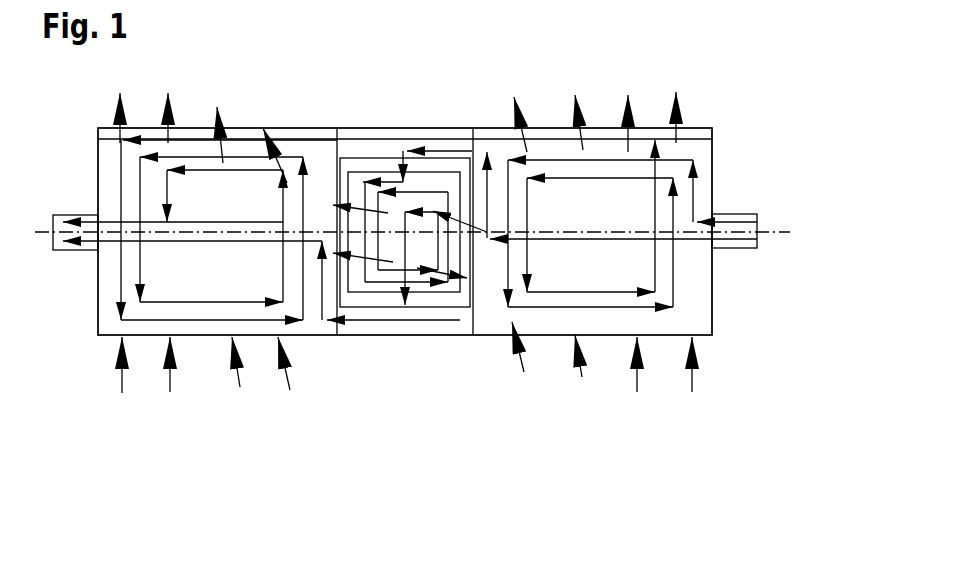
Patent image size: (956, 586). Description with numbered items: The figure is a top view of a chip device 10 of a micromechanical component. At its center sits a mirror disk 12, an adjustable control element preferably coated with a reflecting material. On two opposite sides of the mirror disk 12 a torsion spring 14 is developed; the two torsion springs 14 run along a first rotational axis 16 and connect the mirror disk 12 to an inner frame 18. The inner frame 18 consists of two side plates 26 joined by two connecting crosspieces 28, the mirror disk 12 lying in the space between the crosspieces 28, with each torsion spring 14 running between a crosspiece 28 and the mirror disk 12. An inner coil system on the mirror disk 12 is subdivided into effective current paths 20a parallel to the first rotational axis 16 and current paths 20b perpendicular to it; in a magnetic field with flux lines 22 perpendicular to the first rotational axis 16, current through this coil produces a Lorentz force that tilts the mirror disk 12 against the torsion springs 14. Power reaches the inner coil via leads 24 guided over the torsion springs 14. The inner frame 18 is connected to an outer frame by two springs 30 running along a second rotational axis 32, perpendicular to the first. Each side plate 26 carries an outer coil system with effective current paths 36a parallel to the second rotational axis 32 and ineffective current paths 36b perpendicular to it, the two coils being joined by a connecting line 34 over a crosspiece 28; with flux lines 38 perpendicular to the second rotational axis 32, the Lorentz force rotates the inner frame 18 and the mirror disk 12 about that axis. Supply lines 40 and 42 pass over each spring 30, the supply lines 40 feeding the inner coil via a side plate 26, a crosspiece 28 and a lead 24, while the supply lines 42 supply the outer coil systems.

The chip device 10 is at (727, 88).
The mirror disk 12 is at (440, 180).
The torsion spring 14 is at (413, 170).
The first rotational axis 16 is at (405, 305).
The inner frame 18 is at (458, 320).
The current paths 20a is at (335, 224).
The current paths 20b is at (397, 158).
The magnetic flux lines 22 is at (345, 148).
The leads 24 is at (427, 152).
The side plate 26 is at (110, 295).
The connecting crosspiece 28 is at (362, 147).
The spring 30 is at (64, 217).
The second rotational axis 32 is at (780, 246).
The connecting line 34 is at (463, 137).
The current paths 36a is at (197, 172).
The current paths 36b is at (283, 272).
The flux lines 38 is at (173, 135).
The supply line 40 is at (725, 248).
The supply line 42 is at (750, 214).